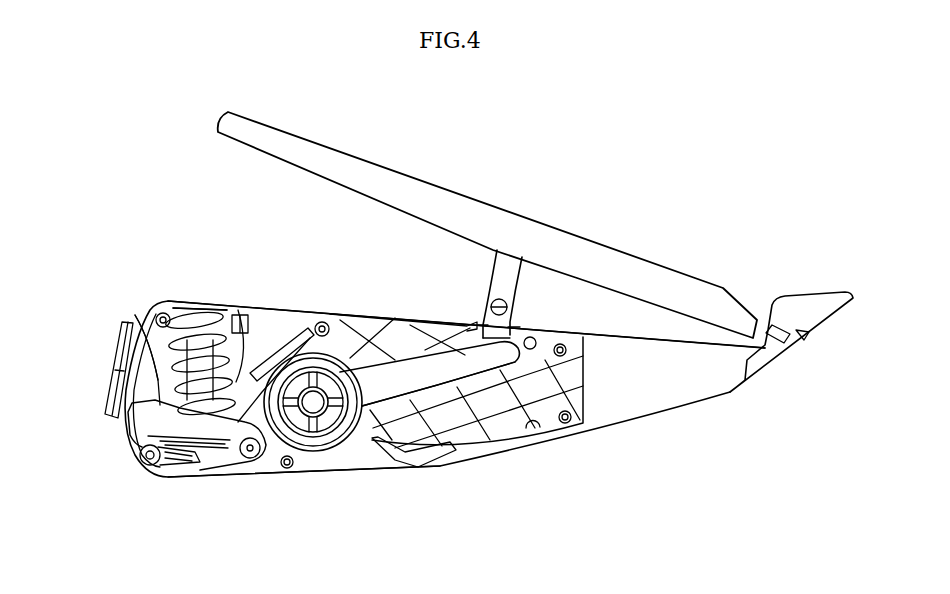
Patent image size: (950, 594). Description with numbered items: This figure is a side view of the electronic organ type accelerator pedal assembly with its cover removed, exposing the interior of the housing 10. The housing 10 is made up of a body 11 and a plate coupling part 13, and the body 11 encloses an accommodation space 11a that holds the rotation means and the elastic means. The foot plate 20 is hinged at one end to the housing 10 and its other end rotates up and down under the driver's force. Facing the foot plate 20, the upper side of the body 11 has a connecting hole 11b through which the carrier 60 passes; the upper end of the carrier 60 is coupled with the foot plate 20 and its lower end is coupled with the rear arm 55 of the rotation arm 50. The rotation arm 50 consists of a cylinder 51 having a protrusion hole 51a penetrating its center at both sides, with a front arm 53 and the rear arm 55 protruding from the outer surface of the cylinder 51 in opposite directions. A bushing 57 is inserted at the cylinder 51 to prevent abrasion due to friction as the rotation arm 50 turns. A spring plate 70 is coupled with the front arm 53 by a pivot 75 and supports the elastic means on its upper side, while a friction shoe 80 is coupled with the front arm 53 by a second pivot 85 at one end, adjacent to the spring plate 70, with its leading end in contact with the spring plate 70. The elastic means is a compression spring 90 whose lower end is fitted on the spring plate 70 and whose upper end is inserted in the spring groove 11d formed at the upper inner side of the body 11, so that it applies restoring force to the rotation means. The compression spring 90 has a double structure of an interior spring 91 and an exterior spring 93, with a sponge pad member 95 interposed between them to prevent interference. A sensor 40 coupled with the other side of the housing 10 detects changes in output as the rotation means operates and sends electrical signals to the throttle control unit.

The housing 10 is at (360, 477).
The body 11 is at (233, 470).
The accommodation space 11a is at (277, 330).
The connecting hole 11b is at (482, 325).
The spring groove 11d is at (203, 320).
The plate coupling part 13 is at (818, 313).
The foot plate 20 is at (430, 182).
The sensor 40 is at (97, 380).
The rotation arm 50 is at (363, 345).
The cylinder 51 is at (393, 440).
The protrusion hole 51a is at (312, 402).
The front arm 53 is at (202, 457).
The rear arm 55 is at (445, 380).
The bushing 57 is at (331, 437).
The carrier 60 is at (488, 272).
The spring plate 70 is at (165, 362).
The pivot 75 is at (251, 450).
The friction shoe 80 is at (128, 432).
The pivot 85 is at (140, 458).
The compression spring 90 is at (151, 214).
The interior spring 91 is at (178, 308).
The exterior spring 93 is at (135, 315).
The pad member 95 is at (245, 315).